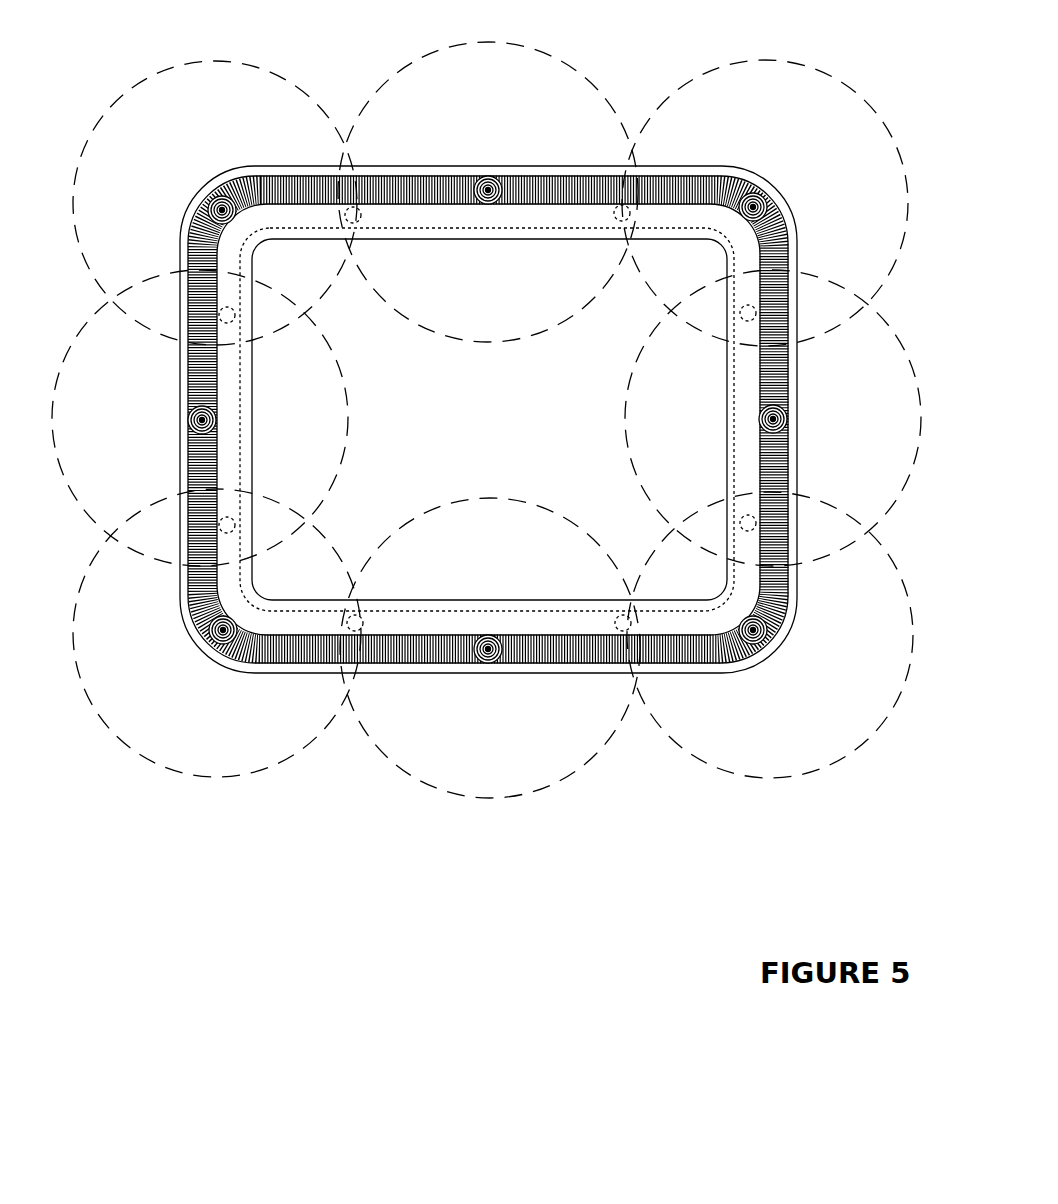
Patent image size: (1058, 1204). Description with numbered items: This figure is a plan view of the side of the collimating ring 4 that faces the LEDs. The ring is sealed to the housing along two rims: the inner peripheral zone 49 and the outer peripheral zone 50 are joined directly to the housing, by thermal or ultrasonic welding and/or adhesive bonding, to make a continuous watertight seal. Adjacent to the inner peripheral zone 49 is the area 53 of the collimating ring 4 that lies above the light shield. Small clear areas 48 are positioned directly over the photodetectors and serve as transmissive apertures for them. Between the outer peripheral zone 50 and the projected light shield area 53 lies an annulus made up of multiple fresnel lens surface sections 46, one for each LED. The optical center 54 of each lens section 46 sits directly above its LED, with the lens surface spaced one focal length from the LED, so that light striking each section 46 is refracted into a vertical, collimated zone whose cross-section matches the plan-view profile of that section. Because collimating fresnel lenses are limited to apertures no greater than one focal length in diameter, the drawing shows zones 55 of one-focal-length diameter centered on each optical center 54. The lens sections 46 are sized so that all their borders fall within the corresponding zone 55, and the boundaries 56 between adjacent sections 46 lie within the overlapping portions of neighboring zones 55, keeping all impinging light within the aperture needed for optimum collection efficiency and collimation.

The collimating ring 4 is at (178, 397).
The fresnel lens section 46 is at (435, 177).
The photodetector aperture area 48 is at (358, 210).
The inner peripheral zone 49 is at (248, 475).
The outer peripheral zone 50 is at (210, 463).
The projected light shield area 53 is at (228, 398).
The optical center 54 is at (490, 188).
The one focal length diametral zone 55 is at (583, 72).
The boundary between adjacent lens sections 56 is at (353, 167).